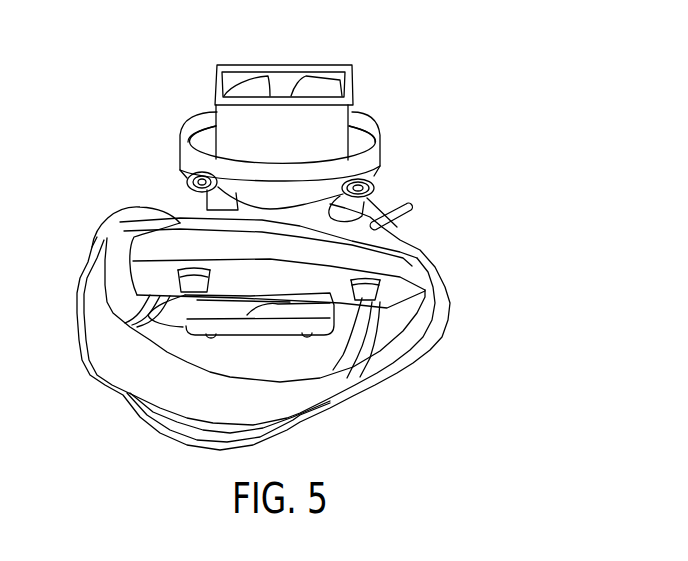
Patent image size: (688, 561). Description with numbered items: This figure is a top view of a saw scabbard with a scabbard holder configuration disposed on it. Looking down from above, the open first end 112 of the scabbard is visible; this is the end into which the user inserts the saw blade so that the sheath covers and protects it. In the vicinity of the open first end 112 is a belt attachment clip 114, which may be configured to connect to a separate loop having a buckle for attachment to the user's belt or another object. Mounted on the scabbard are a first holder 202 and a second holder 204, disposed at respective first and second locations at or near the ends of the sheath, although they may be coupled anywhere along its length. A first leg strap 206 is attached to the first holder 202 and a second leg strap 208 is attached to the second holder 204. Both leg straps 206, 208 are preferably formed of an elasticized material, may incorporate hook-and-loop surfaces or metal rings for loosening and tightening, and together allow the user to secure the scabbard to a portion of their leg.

The belt attachment clip 114 is at (358, 82).
The open first end 112 is at (385, 150).
The first holder 202 is at (158, 251).
The second holder 204 is at (186, 342).
The first leg strap 206 is at (430, 313).
The second leg strap 208 is at (367, 337).